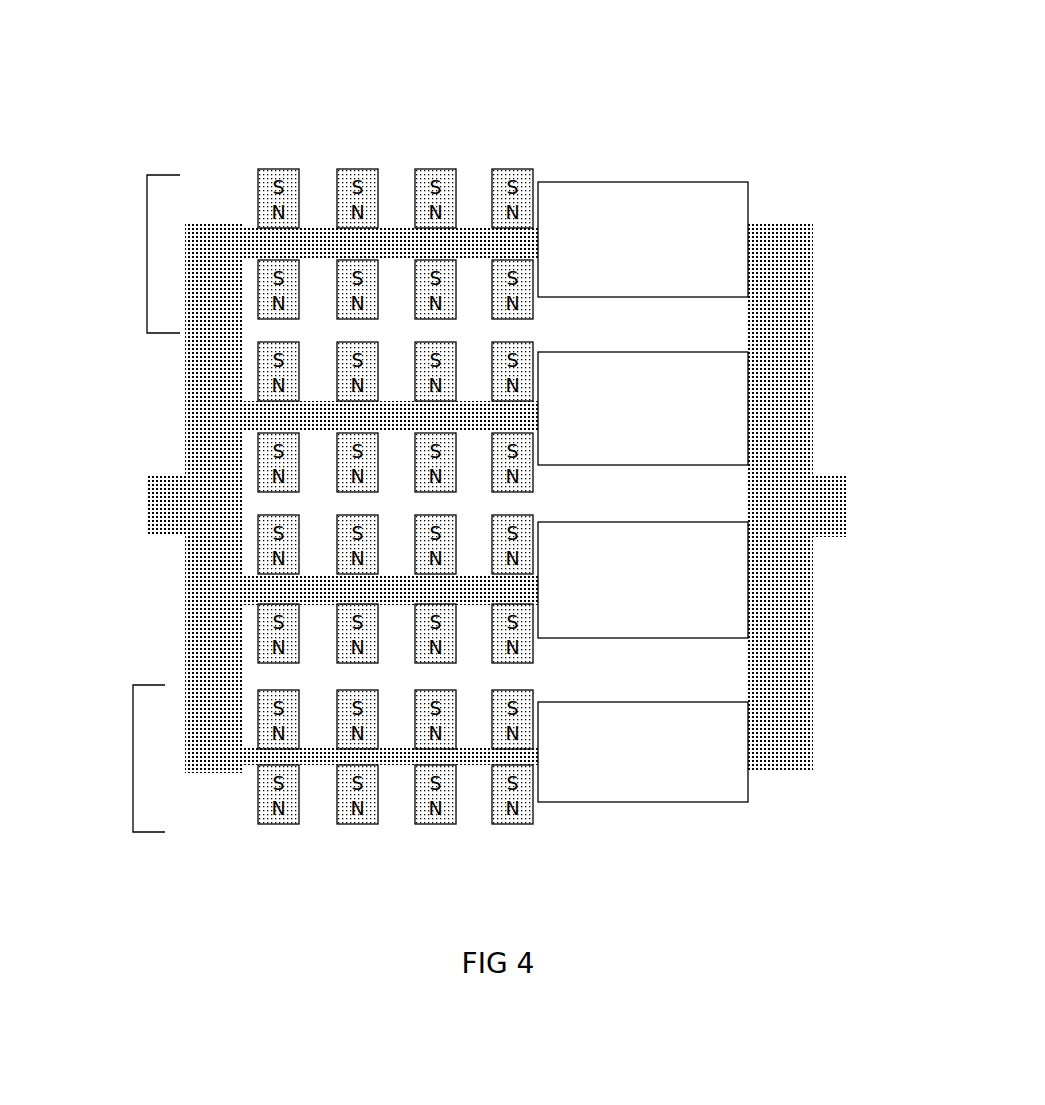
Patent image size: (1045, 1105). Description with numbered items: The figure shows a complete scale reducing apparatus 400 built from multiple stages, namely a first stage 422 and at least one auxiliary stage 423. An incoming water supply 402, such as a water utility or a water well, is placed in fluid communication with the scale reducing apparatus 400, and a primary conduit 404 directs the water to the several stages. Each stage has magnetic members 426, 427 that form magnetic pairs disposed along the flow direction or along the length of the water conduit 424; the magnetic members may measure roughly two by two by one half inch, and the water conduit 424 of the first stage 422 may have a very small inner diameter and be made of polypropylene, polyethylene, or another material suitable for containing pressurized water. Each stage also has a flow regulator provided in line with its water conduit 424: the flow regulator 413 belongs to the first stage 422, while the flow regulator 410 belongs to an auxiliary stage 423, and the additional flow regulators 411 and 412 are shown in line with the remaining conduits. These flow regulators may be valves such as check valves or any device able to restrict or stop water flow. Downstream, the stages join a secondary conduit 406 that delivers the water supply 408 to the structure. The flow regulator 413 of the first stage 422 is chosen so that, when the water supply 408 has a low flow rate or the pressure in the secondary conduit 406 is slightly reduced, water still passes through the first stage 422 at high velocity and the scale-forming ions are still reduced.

The scale reducing apparatus 400 is at (178, 65).
The incoming water supply 402 is at (147, 535).
The primary conduit 404 is at (212, 663).
The secondary conduit 406 is at (778, 708).
The water supply to the structure 408 is at (830, 527).
The flow regulator 410 is at (645, 182).
The flow regulator 411 is at (730, 352).
The flow regulator 412 is at (713, 521).
The flow regulator 413 is at (685, 802).
The first stage 422 is at (133, 778).
The auxiliary stage 423 is at (148, 290).
The water conduit 424 is at (320, 230).
The magnetic member 426 is at (363, 169).
The magnetic member 427 is at (455, 290).